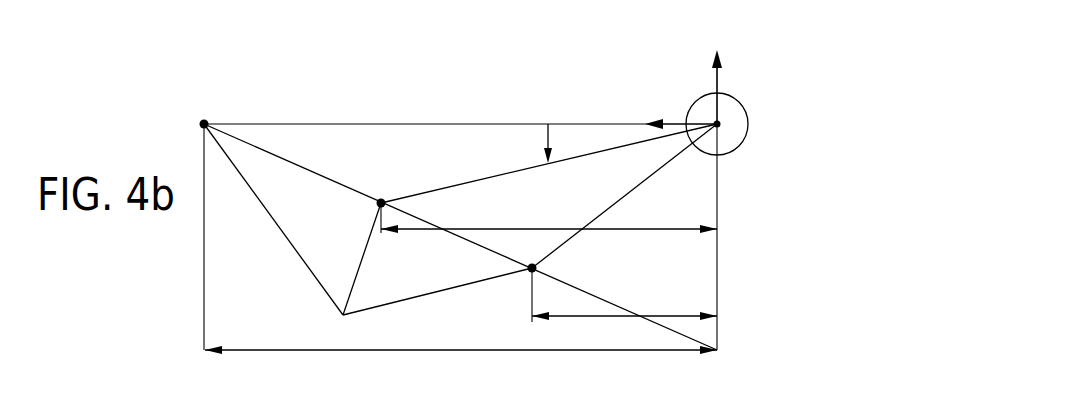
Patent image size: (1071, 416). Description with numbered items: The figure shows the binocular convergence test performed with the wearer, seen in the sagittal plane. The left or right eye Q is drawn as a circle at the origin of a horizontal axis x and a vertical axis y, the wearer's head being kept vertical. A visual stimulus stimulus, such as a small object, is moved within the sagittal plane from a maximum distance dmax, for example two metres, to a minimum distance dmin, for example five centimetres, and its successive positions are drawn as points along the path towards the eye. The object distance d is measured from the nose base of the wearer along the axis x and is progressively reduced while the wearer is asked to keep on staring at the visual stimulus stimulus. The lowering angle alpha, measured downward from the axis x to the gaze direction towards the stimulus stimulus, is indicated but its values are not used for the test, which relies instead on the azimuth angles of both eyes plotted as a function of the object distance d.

The left/right eye Q is at (783, 32).
The object distance d is at (549, 217).
The minimum distance dmin is at (624, 301).
The maximum distance dmax is at (461, 365).
The lowering angle alpha is at (536, 143).
The x axis x is at (677, 113).
The y axis y is at (724, 87).
The visual stimulus is at (459, 235).